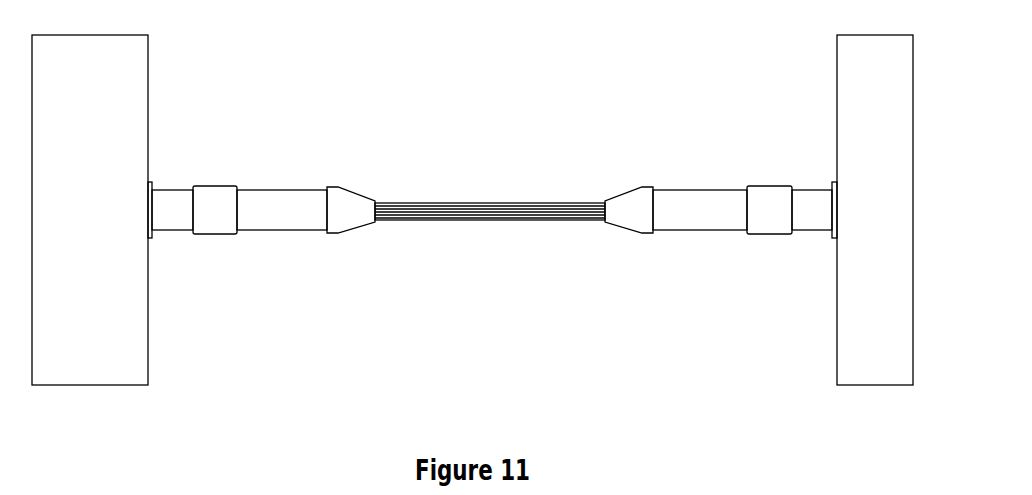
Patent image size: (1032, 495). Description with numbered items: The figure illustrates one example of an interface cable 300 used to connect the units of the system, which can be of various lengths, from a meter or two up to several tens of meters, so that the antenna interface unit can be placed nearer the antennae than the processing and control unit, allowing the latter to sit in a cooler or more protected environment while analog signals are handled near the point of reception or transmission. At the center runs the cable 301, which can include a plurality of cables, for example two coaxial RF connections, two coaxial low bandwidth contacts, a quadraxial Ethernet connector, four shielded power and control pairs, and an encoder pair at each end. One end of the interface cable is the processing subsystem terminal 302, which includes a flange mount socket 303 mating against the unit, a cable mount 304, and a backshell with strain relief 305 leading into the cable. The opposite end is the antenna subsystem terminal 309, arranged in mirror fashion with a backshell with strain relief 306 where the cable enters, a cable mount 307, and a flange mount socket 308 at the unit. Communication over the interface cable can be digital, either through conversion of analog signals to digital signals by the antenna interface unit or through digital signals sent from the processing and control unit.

The interface cable 300 is at (565, 57).
The cable 301 is at (471, 202).
The processing subsystem terminal 302 is at (172, 188).
The flange mount socket 303 is at (180, 232).
The cable mount 304 is at (215, 234).
The backshell with strain relief 305 is at (283, 230).
The backshell with strain relief 306 is at (700, 232).
The cable mount 307 is at (768, 234).
The flange mount socket 308 is at (793, 232).
The antenna subsystem terminal 309 is at (810, 188).